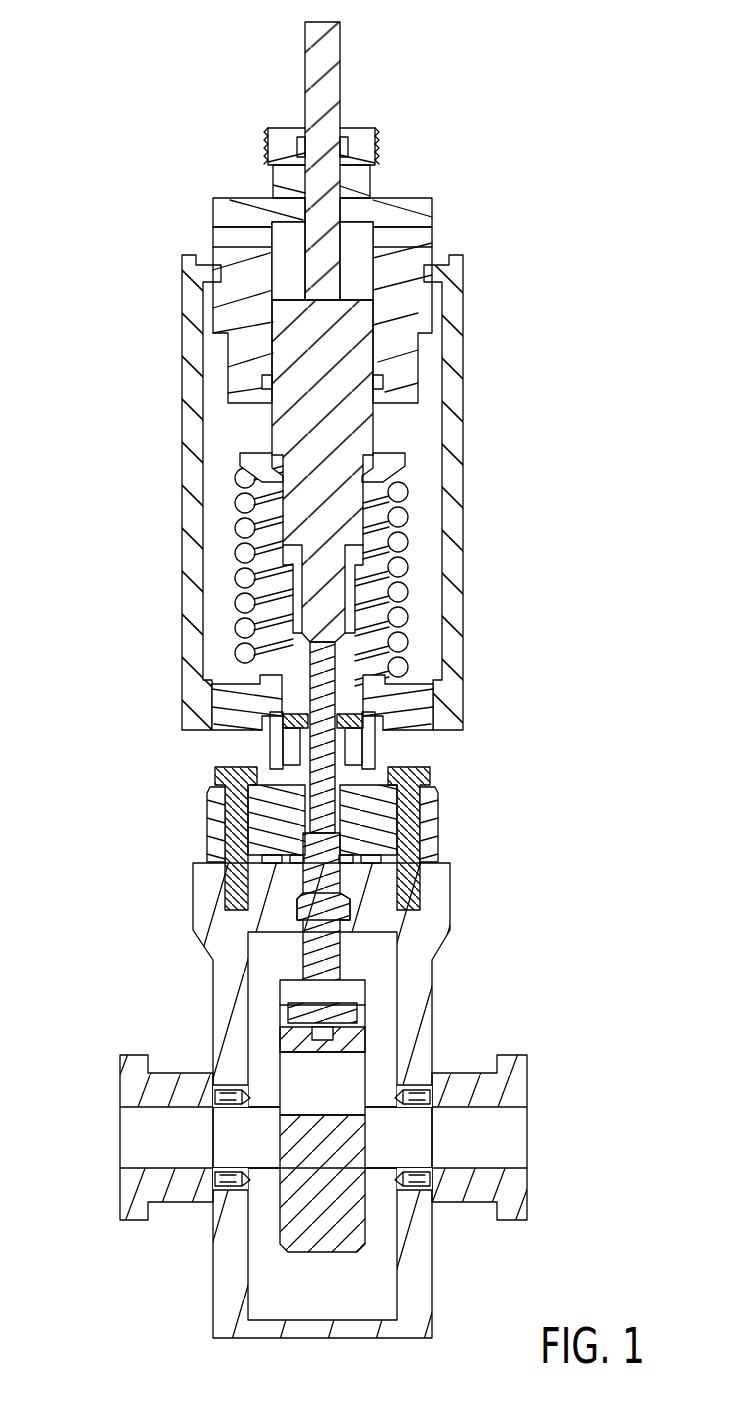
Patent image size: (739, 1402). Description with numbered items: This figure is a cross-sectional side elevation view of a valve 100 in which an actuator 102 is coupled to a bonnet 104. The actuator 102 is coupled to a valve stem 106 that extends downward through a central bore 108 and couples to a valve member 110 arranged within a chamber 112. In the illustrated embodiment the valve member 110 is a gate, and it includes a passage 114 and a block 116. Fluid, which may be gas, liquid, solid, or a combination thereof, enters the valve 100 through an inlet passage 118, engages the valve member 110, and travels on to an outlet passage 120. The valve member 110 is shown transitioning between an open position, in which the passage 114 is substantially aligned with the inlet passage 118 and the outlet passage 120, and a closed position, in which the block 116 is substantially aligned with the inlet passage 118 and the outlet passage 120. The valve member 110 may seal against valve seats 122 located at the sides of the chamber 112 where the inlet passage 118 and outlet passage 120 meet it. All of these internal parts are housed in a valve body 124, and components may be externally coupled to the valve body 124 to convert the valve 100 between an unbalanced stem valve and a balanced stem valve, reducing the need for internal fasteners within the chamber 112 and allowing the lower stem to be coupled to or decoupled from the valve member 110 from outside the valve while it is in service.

The valve 100 is at (316, 681).
The actuator 102 is at (130, 359).
The bonnet 104 is at (462, 822).
The valve stem 106 is at (323, 750).
The central bore 108 is at (353, 912).
The valve member 110 is at (270, 1217).
The chamber 112 is at (363, 1275).
The passage 114 is at (323, 1053).
The block 116 is at (368, 1217).
The inlet passage 118 is at (165, 1168).
The outlet passage 120 is at (527, 1155).
The valve seats 122 is at (243, 1090).
The valve body 124 is at (332, 1102).